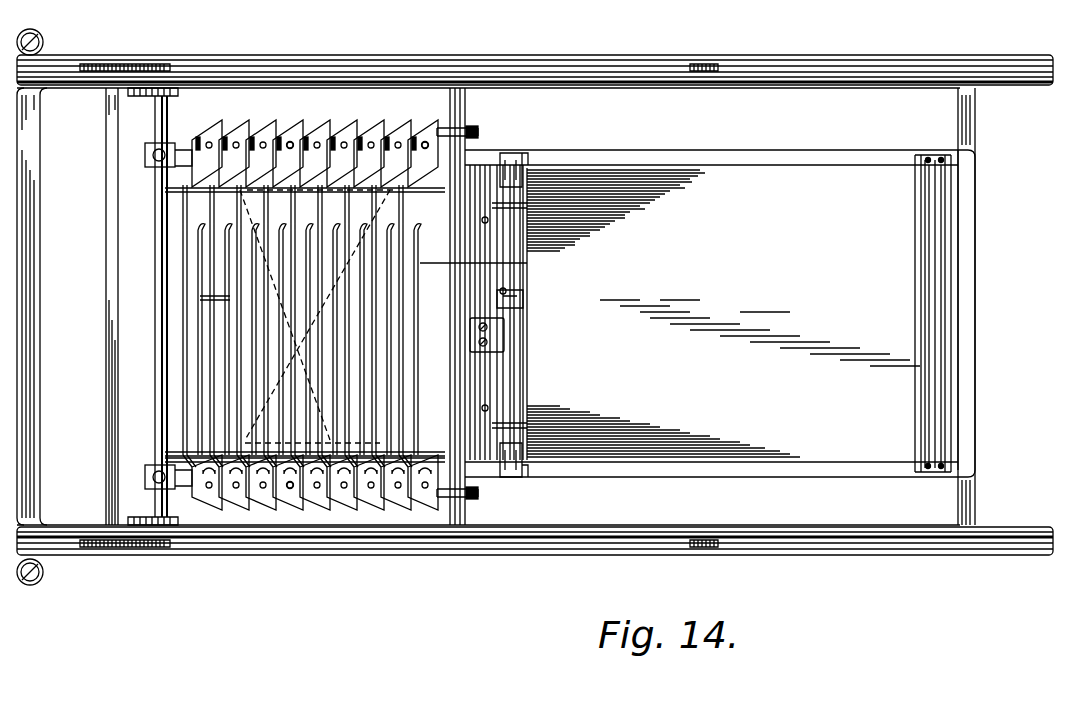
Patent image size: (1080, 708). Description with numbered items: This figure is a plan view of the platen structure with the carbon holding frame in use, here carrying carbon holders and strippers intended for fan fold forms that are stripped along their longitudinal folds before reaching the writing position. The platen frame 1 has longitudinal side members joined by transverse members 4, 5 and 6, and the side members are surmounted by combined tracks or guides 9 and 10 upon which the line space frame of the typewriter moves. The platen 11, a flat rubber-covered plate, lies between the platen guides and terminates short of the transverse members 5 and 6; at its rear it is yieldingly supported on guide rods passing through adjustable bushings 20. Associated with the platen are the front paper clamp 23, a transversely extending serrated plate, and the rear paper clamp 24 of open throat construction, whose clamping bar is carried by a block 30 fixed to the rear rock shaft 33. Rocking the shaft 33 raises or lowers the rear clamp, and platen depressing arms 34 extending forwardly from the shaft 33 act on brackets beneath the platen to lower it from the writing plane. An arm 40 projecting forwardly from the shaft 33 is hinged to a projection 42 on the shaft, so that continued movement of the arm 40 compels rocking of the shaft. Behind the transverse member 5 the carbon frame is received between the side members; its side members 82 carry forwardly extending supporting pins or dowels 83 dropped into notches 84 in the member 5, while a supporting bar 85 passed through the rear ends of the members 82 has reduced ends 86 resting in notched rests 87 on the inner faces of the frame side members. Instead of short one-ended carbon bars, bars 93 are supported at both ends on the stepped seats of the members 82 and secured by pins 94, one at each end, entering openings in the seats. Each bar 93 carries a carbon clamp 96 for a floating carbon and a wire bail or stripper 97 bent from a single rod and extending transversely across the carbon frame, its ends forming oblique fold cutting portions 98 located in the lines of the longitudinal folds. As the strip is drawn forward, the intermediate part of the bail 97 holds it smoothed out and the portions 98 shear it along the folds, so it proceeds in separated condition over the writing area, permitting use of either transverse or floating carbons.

The platen frame 1 is at (930, 88).
The transverse member 4 is at (106, 345).
The transverse member 5 is at (455, 372).
The transverse member 6 is at (977, 182).
The combined track or guide 9 is at (874, 56).
The combined track or guide 10 is at (938, 553).
The platen 11 is at (720, 313).
The adjustable bushing 20 is at (515, 372).
The front paper clamp 23 is at (925, 227).
The rear paper clamp 24 is at (520, 472).
The block 30 is at (508, 330).
The rear rock shaft 33 is at (497, 395).
The platen depressing arm 34 is at (524, 425).
The arm 40 is at (525, 306).
The projection 42 is at (510, 292).
The side member 82 is at (168, 490).
The supporting pin or dowel 83 is at (480, 493).
The notch 84 is at (467, 503).
The supporting bar 85 is at (168, 108).
The reduced end 86 is at (162, 530).
The notched rest 87 is at (125, 530).
The bar 93 is at (432, 153).
The pin 94 is at (291, 490).
The carbon clamp 96 is at (200, 300).
The wire bail or stripper 97 is at (210, 503).
The oblique fold cutting portion 98 is at (165, 468).